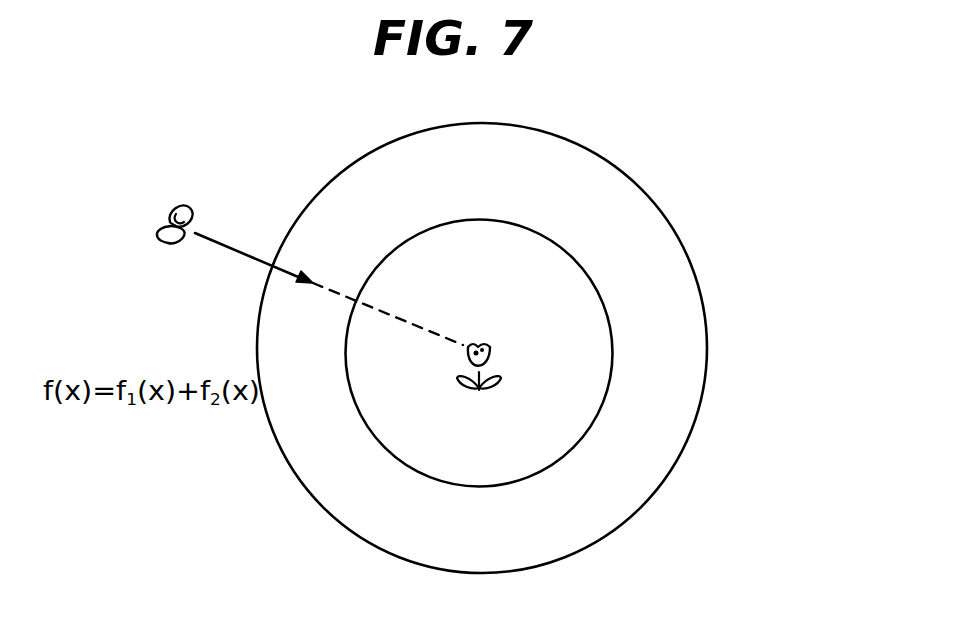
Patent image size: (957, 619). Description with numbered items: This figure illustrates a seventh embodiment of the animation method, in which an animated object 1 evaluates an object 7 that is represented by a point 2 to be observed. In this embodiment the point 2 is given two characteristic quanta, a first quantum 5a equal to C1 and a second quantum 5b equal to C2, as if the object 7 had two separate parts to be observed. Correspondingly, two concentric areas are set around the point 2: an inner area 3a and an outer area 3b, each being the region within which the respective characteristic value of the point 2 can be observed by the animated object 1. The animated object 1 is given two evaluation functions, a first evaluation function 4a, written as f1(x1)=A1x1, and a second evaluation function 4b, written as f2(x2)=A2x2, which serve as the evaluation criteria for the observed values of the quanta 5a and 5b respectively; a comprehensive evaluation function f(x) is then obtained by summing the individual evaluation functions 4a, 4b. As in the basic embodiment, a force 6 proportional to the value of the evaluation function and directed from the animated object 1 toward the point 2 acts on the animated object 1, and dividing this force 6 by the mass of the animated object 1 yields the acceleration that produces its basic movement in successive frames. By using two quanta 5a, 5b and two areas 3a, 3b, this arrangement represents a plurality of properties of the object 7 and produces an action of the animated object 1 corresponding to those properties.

The animated object 1 is at (182, 208).
The point to be observed 2 is at (478, 343).
The area 3a is at (525, 247).
The area 3b is at (627, 210).
The evaluation function 4a is at (95, 268).
The evaluation function 4b is at (95, 317).
The quantum C1 5a is at (503, 440).
The quantum C2 5b is at (550, 442).
The force 6 is at (230, 247).
The object 7 is at (492, 355).